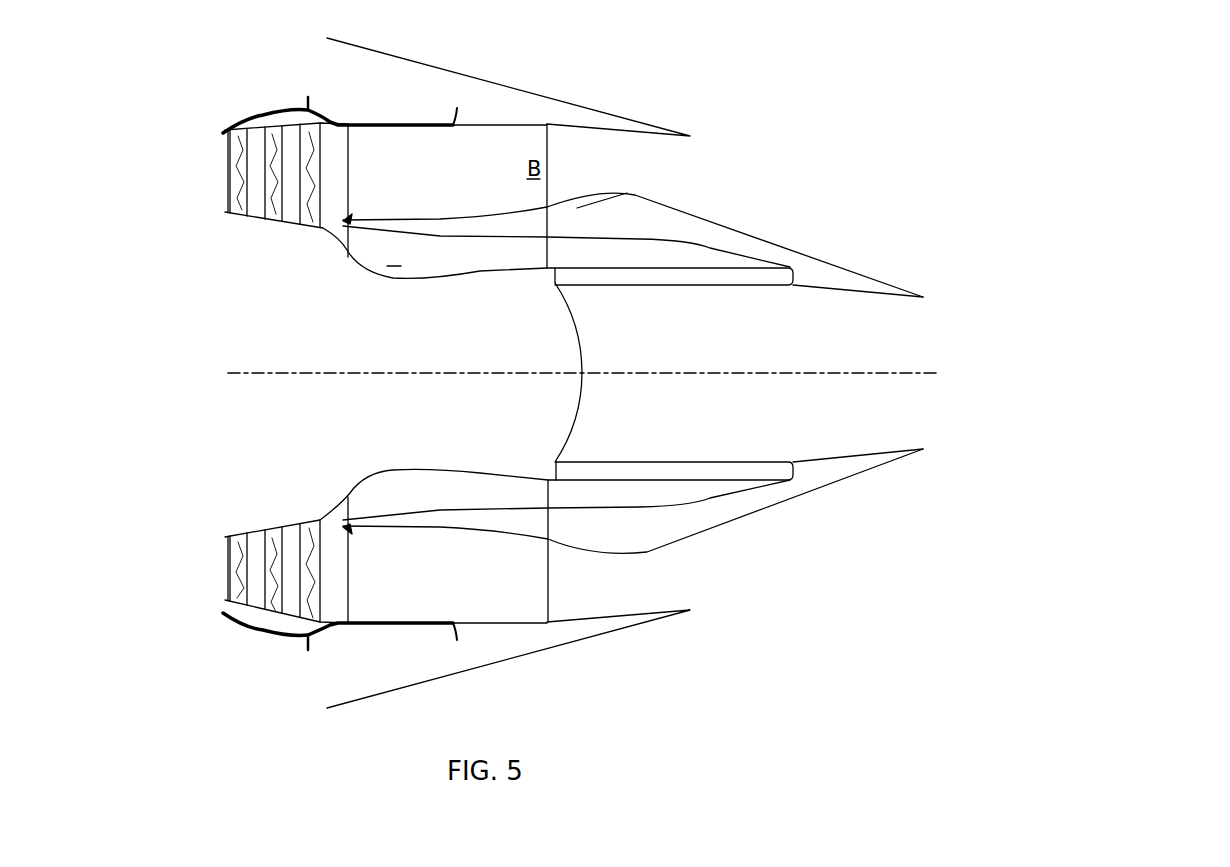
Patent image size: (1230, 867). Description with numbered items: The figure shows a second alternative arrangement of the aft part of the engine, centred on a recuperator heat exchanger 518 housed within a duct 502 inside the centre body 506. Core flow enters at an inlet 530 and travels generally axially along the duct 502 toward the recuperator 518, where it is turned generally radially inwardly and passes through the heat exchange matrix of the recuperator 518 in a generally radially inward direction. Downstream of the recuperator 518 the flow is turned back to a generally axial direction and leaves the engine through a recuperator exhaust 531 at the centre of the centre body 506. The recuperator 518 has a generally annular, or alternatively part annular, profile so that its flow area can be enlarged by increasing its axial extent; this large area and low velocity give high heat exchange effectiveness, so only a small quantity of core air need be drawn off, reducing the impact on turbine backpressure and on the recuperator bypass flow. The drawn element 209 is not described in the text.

The compressor section 209 is at (307, 166).
The duct 502 is at (427, 250).
The centre body 506 is at (627, 193).
The recuperator heat exchanger 518 is at (680, 268).
The inlet 530 is at (350, 220).
The recuperator exhaust 531 is at (913, 332).